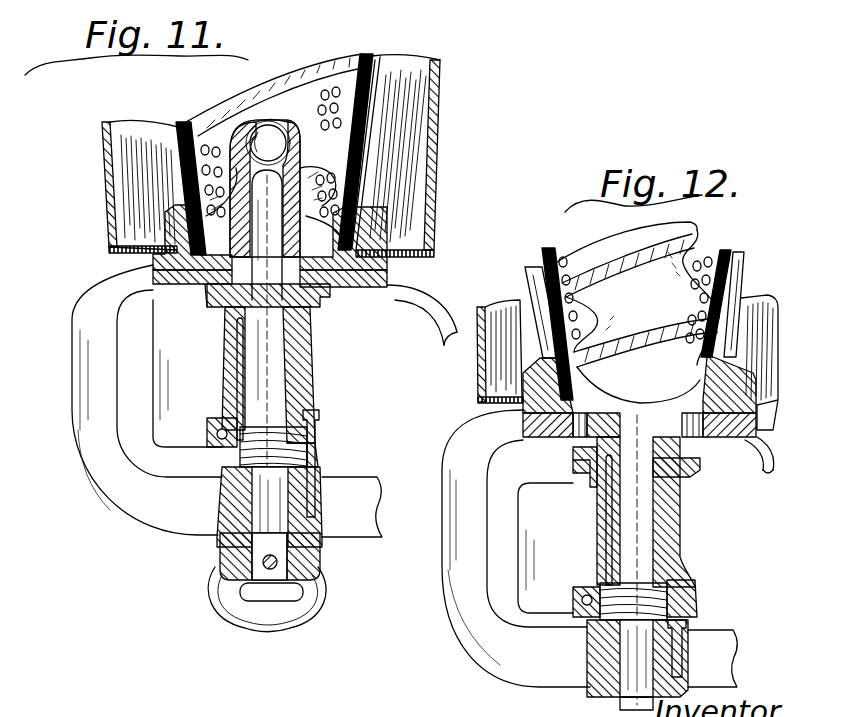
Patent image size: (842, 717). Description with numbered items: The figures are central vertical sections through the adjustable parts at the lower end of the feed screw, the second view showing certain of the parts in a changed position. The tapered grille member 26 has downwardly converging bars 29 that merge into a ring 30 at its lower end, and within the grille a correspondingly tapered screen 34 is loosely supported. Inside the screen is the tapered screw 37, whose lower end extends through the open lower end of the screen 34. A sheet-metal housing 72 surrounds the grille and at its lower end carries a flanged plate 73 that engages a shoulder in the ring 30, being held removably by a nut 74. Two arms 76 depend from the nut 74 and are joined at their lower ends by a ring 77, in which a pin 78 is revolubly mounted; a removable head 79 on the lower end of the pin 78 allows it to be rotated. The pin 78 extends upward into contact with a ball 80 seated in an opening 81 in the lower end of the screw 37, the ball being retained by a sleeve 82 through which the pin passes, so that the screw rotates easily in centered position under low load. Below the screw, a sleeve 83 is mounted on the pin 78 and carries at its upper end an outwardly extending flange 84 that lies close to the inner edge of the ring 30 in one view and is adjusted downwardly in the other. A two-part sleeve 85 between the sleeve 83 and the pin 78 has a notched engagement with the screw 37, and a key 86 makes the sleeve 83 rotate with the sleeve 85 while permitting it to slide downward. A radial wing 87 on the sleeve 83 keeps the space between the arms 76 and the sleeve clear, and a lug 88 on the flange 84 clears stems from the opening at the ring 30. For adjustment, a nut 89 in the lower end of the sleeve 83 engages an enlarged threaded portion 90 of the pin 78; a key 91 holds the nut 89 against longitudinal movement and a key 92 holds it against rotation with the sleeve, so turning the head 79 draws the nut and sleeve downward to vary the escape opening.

In FIG. 11, the grille member 26 is at (172, 126).
In FIG. 12, the grille member 26 is at (747, 258).
In FIG. 11, the bars 29 is at (143, 187).
In FIG. 12, the bars 29 is at (543, 266).
In FIG. 11, the ring 30 is at (157, 225).
In FIG. 12, the ring 30 is at (513, 337).
In FIG. 11, the screen 34 is at (370, 95).
In FIG. 12, the screen 34 is at (552, 248).
In FIG. 11, the tapered screw 37 is at (242, 86).
In FIG. 12, the tapered screw 37 is at (596, 238).
In FIG. 11, the housing 72 is at (108, 124).
In FIG. 12, the housing 72 is at (483, 377).
In FIG. 11, the flanged plate 73 is at (150, 263).
In FIG. 12, the flanged plate 73 is at (639, 397).
In FIG. 11, the nut 74 is at (153, 277).
In FIG. 12, the nut 74 is at (535, 440).
In FIG. 11, the arms 76 is at (425, 335).
In FIG. 12, the arms 76 is at (770, 462).
In FIG. 11, the ring 77 is at (220, 538).
In FIG. 12, the ring 77 is at (603, 648).
In FIG. 11, the pin 78 is at (315, 380).
In FIG. 12, the pin 78 is at (620, 667).
In FIG. 11, the removable head 79 is at (237, 600).
In FIG. 11, the ball 80 is at (269, 136).
In FIG. 11, the opening 81 is at (236, 125).
In FIG. 11, the sleeve 82 is at (247, 172).
In FIG. 11, the sleeve 83 is at (313, 357).
In FIG. 12, the sleeve 83 is at (682, 530).
In FIG. 11, the flange 84 is at (318, 308).
In FIG. 12, the flange 84 is at (582, 478).
In FIG. 11, the two-part sleeve 85 is at (293, 343).
In FIG. 12, the two-part sleeve 85 is at (620, 413).
In FIG. 11, the pin or key 86 is at (235, 368).
In FIG. 12, the pin or key 86 is at (606, 520).
In FIG. 11, the wing or plate 87 is at (153, 385).
In FIG. 12, the wing or plate 87 is at (522, 557).
In FIG. 11, the lug 88 is at (207, 292).
In FIG. 12, the lug 88 is at (578, 458).
In FIG. 11, the nut 89 is at (213, 418).
In FIG. 12, the nut 89 is at (693, 584).
In FIG. 11, the threaded portion 90 is at (310, 447).
In FIG. 12, the threaded portion 90 is at (694, 590).
In FIG. 11, the key 91 is at (212, 448).
In FIG. 12, the key 91 is at (574, 600).
In FIG. 11, the key or pin 92 is at (314, 462).
In FIG. 12, the key or pin 92 is at (688, 640).